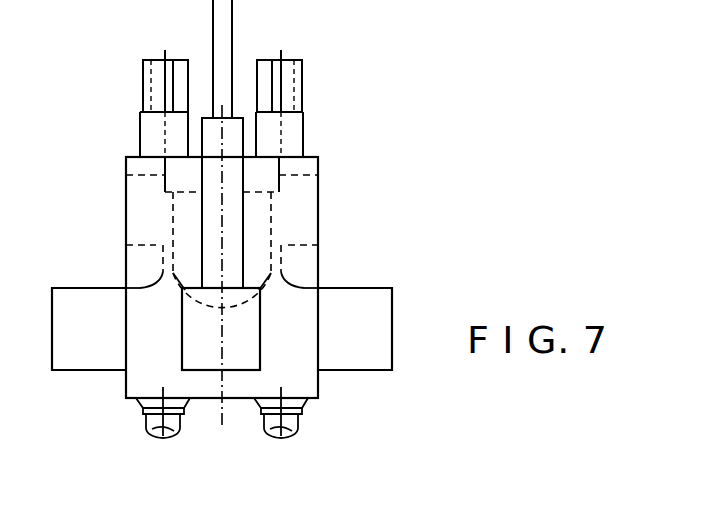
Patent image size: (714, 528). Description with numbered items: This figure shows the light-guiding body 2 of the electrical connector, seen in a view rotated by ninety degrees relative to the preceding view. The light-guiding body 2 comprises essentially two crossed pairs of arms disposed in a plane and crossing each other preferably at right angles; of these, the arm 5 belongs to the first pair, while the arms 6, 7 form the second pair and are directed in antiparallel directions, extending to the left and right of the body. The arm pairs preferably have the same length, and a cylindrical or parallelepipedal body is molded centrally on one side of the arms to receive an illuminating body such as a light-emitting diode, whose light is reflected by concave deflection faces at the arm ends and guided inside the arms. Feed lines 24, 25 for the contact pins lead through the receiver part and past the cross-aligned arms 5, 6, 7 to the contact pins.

The light-guiding body 2 is at (295, 208).
The arm 5 is at (238, 335).
The arm 6 is at (357, 303).
The arm 7 is at (79, 308).
The feed line 24 is at (158, 77).
The feed line 25 is at (288, 70).